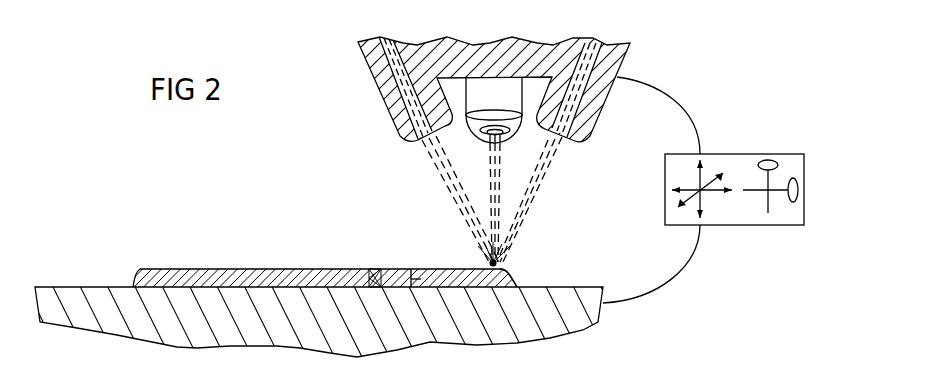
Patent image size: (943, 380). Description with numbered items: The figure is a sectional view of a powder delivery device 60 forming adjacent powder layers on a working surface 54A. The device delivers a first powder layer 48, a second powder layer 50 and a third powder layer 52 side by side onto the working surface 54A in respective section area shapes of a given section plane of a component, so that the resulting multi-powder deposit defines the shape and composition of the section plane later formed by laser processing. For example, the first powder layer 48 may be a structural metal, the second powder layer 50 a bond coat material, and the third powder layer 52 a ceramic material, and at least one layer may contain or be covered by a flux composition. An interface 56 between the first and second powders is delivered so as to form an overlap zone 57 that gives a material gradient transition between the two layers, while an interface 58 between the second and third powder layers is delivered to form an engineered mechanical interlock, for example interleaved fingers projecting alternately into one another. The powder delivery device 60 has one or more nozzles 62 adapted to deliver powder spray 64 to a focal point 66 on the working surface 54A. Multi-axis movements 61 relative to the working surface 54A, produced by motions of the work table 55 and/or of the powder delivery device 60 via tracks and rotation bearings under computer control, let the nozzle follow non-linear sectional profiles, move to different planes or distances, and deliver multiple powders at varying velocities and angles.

The first powder layer 48 is at (238, 275).
The second powder layer 50 is at (392, 285).
The third powder layer 52 is at (442, 285).
The working surface 54A is at (572, 285).
The work table 55 is at (570, 323).
The interface 56 is at (376, 277).
The overlap zone 57 is at (367, 268).
The interface 58 is at (416, 279).
The powder delivery device 60 is at (368, 114).
The multi-axis movements 61 is at (733, 153).
The nozzle 62 is at (418, 142).
The powder spray 64 is at (537, 185).
The focal point 66 is at (503, 259).